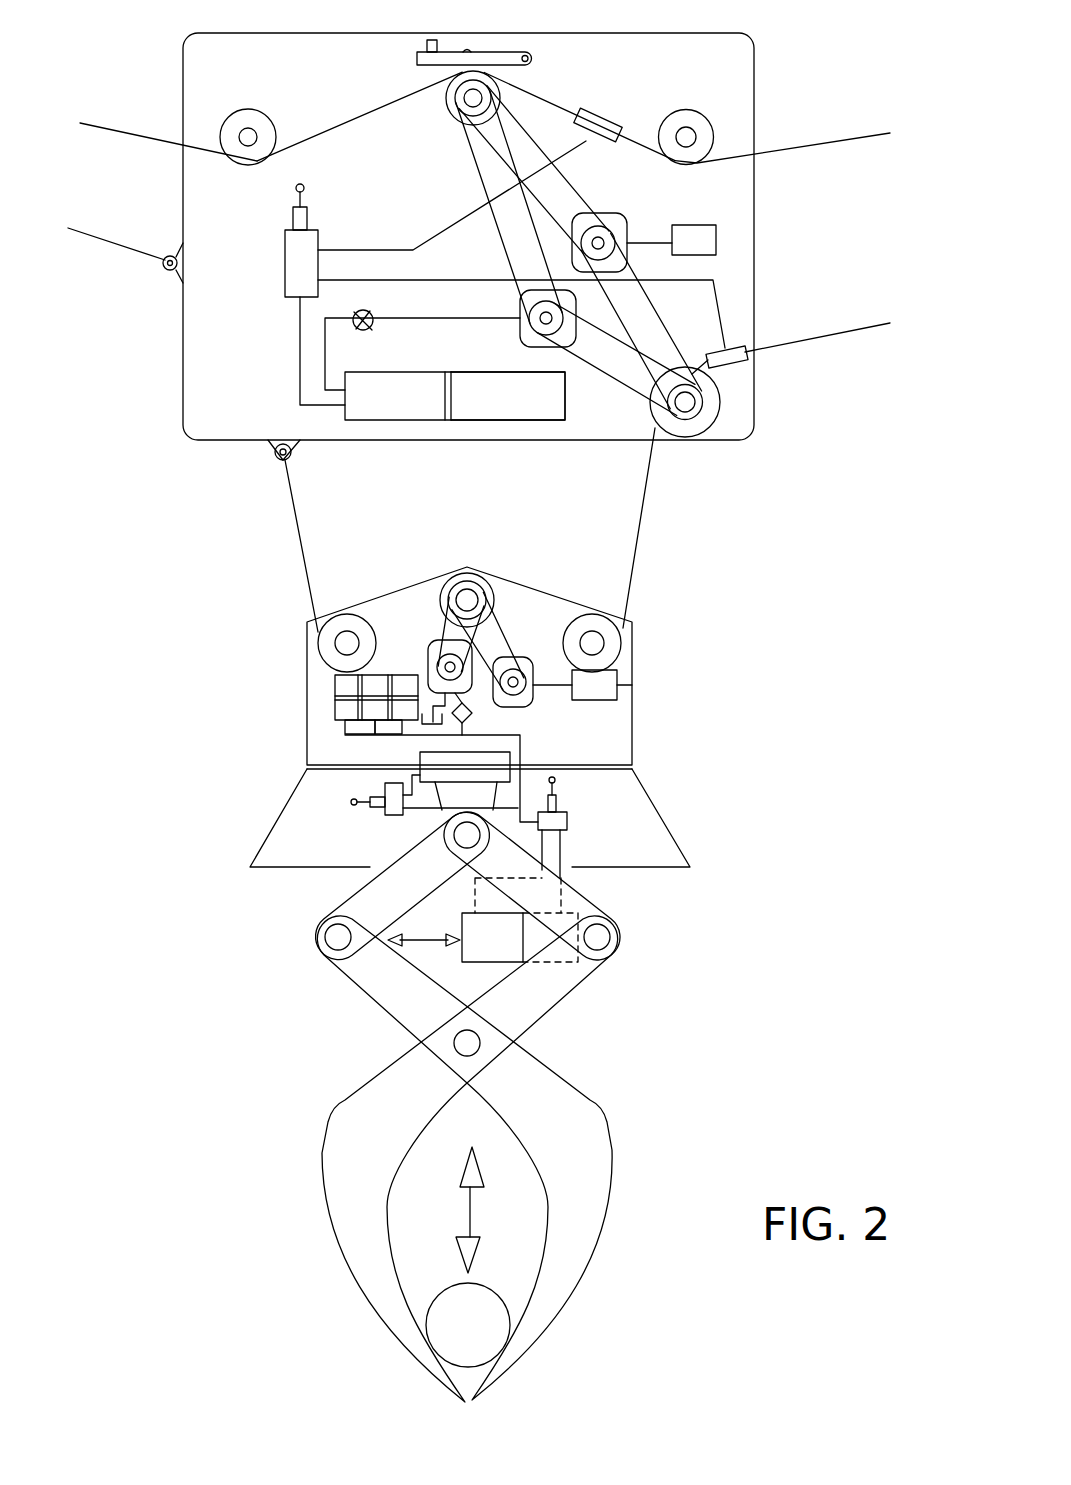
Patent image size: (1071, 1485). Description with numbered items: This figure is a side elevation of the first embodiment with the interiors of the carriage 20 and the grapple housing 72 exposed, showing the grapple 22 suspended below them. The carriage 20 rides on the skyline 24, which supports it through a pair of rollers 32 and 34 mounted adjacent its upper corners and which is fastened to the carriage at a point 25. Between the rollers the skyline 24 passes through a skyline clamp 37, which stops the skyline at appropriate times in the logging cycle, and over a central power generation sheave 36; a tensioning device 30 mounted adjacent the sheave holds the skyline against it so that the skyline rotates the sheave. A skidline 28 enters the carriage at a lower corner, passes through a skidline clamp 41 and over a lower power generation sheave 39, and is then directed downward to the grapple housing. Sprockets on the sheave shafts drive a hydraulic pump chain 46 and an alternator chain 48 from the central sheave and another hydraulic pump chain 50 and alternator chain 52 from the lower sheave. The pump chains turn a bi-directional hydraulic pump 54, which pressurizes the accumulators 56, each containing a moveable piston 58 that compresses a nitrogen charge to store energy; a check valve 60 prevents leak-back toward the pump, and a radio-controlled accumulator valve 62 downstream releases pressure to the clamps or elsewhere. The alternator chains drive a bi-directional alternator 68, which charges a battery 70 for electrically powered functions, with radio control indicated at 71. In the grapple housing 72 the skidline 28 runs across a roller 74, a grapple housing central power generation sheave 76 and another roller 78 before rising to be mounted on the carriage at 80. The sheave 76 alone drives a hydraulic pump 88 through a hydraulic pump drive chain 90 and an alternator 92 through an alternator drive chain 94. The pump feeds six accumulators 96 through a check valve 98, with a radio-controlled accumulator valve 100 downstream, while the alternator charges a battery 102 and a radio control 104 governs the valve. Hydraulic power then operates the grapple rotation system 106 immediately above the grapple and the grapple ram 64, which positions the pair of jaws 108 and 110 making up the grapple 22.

The carriage 20 is at (778, 70).
The grapple 22 is at (471, 1107).
The skyline 24 is at (114, 128).
The skyline fastening point 25 is at (163, 272).
The skidline 28 is at (822, 322).
The tensioning device 30 is at (408, 64).
The roller 32 is at (688, 109).
The roller 34 is at (247, 109).
The central power generation sheave 36 is at (447, 100).
The skyline clamp 37 is at (603, 115).
The lower power generation sheave 39 is at (706, 428).
The skidline clamp 41 is at (740, 366).
The hydraulic pump chain 46 is at (546, 158).
The alternator chain 48 is at (476, 163).
The hydraulic pump chain 50 is at (657, 318).
The alternator chain 52 is at (607, 368).
The bi-directional hydraulic pump 54 is at (520, 311).
The accumulator 56 is at (484, 372).
The moveable piston 58 is at (442, 397).
The check valve 60 is at (373, 328).
The radio-controlled accumulator valve 62 is at (285, 250).
The grapple ram 64 is at (507, 953).
The bi-directional alternator 68 is at (604, 212).
The battery 70 is at (697, 224).
The radio control 71 is at (292, 223).
The grapple housing 72 is at (283, 626).
The roller 74 is at (594, 614).
The grapple housing central power generation sheave 76 is at (473, 573).
The roller 78 is at (346, 614).
The skidline mounting point 80 is at (274, 457).
The hydraulic pump 88 is at (432, 672).
The hydraulic pump drive chain 90 is at (442, 632).
The alternator 92 is at (538, 645).
The alternator drive chain 94 is at (510, 643).
The accumulator 96 is at (336, 702).
The check valve 98 is at (472, 714).
The radio-controlled accumulator valve 100 is at (385, 790).
The battery 102 is at (635, 688).
The radio control 104 is at (375, 806).
The grapple rotation system 106 is at (420, 760).
The jaw 108 is at (612, 1218).
The jaw 110 is at (323, 1203).